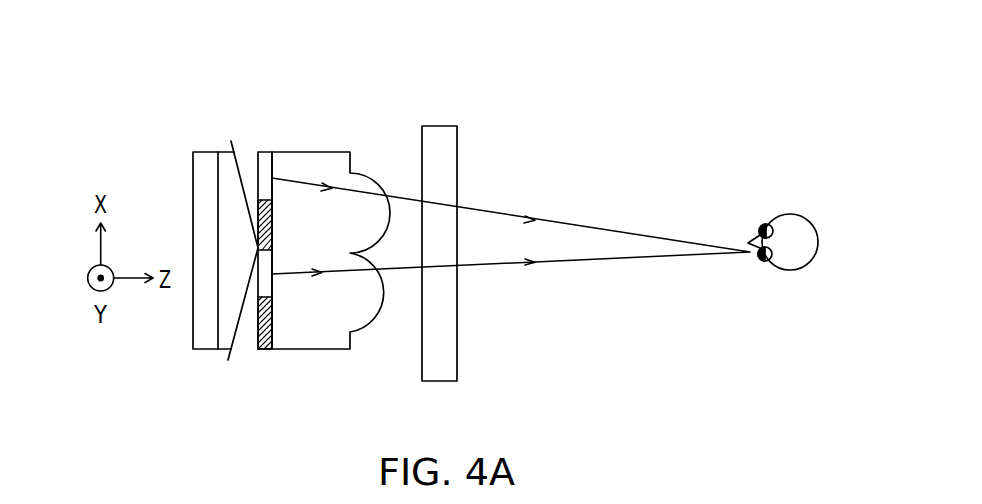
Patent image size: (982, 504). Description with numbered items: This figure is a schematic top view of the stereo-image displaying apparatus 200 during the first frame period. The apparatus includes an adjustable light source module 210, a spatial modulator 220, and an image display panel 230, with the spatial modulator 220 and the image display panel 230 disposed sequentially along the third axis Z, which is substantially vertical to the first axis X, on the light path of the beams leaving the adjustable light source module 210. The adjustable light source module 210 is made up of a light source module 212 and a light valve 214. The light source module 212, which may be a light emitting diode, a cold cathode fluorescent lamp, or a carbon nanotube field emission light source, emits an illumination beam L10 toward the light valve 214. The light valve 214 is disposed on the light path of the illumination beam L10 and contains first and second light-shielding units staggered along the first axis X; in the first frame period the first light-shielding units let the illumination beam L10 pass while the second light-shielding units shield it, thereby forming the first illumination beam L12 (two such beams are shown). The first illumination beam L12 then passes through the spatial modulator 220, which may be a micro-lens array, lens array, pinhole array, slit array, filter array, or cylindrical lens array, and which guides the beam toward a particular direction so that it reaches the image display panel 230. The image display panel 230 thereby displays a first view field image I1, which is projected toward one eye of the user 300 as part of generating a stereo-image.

The stereo-image displaying apparatus 200 is at (523, 54).
The adjustable light source module 210 is at (258, 67).
The light source module 212 is at (207, 165).
The light valve 214 is at (265, 165).
The spatial modulator 220 is at (308, 165).
The image display panel 230 is at (441, 138).
The user 300 is at (790, 213).
The illumination beam L10 is at (238, 338).
The first illumination beam L12 is at (407, 195).
The first view field image I1 is at (565, 240).